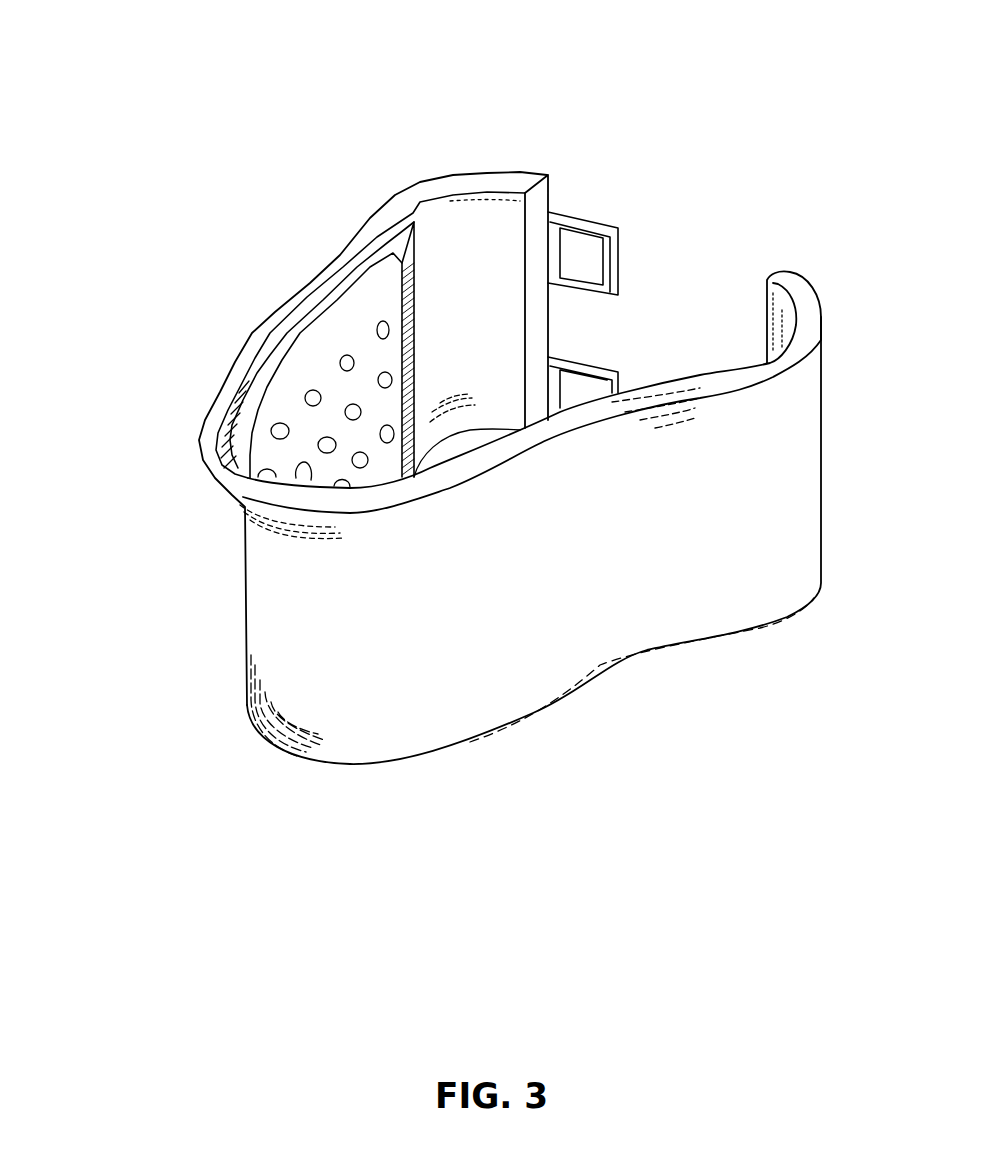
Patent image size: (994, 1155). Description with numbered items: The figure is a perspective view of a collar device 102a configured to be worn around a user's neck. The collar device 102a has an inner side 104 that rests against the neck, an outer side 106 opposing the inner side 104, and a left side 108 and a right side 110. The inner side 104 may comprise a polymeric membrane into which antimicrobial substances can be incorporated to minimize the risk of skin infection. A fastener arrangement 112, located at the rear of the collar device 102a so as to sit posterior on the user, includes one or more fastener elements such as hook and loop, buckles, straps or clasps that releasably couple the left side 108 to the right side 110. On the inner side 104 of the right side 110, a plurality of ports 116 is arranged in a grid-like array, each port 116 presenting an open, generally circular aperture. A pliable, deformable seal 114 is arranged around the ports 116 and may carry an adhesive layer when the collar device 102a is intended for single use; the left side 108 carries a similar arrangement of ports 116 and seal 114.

The collar device 102a is at (698, 863).
The inner side 104 is at (480, 227).
The outer side 106 is at (367, 708).
The left side 108 is at (641, 584).
The right side 110 is at (208, 494).
The fastener arrangement 112 is at (618, 370).
The seal 114 is at (405, 322).
The port 116 is at (344, 356).